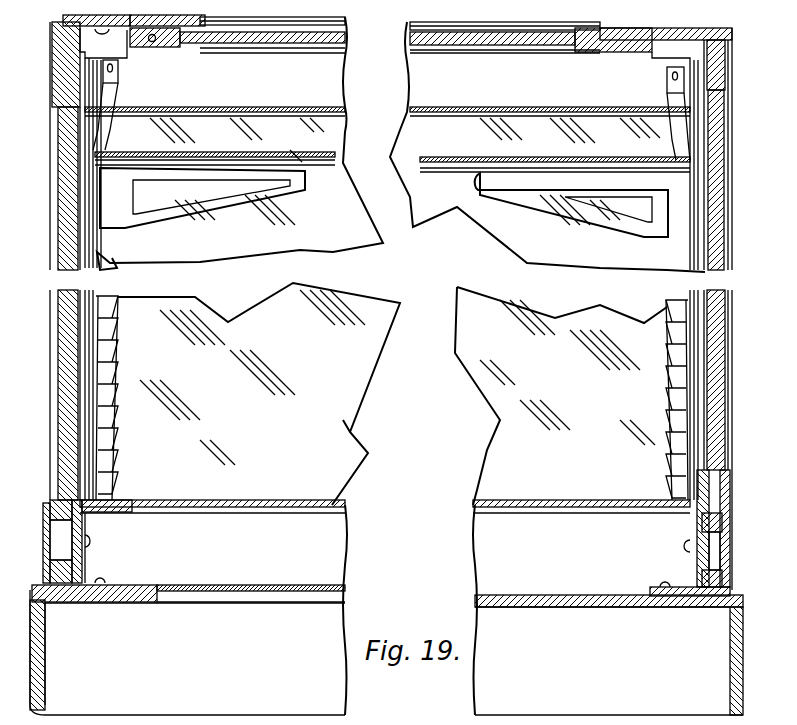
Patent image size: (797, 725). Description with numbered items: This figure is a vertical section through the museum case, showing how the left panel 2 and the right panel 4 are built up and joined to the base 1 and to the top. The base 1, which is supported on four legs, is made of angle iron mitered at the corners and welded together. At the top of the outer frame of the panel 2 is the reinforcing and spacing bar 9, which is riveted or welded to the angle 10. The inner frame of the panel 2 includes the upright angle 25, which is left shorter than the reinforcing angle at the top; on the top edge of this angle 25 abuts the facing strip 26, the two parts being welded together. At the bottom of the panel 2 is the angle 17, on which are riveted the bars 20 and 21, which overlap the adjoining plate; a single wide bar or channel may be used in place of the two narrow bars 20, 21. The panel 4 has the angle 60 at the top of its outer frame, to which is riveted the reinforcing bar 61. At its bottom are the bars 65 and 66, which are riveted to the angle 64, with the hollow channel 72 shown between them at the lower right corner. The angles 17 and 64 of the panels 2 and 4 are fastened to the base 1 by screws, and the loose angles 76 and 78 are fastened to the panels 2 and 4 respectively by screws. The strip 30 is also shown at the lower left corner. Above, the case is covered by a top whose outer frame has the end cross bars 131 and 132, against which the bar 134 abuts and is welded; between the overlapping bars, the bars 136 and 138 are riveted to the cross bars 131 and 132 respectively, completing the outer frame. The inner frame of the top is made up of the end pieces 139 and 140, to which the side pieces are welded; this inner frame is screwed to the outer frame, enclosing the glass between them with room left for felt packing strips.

The base 1 is at (30, 644).
The panel 2 is at (57, 388).
The panel 4 is at (722, 372).
The reinforcing and spacing bar 9 is at (55, 52).
The angle 10 is at (58, 33).
The angle 17 is at (42, 540).
The bar 20 is at (43, 508).
The bar 21 is at (42, 578).
The upright angle 25 is at (75, 130).
The facing strip 26 is at (93, 50).
The inner corner strip 30 is at (86, 530).
The angle 60 is at (734, 58).
The reinforcing bar 61 is at (722, 80).
The angle 64 is at (731, 512).
The bar 65 is at (724, 580).
The bar 66 is at (724, 526).
The right hollow channel 72 is at (712, 551).
The angle 76 is at (87, 570).
The angle 78 is at (695, 530).
The cross bar 131 is at (158, 11).
The cross bar 132 is at (603, 29).
The bar 134 is at (427, 717).
The bar 136 is at (152, 42).
The bar 138 is at (630, 52).
The end piece 139 is at (183, 43).
The end piece 140 is at (580, 53).